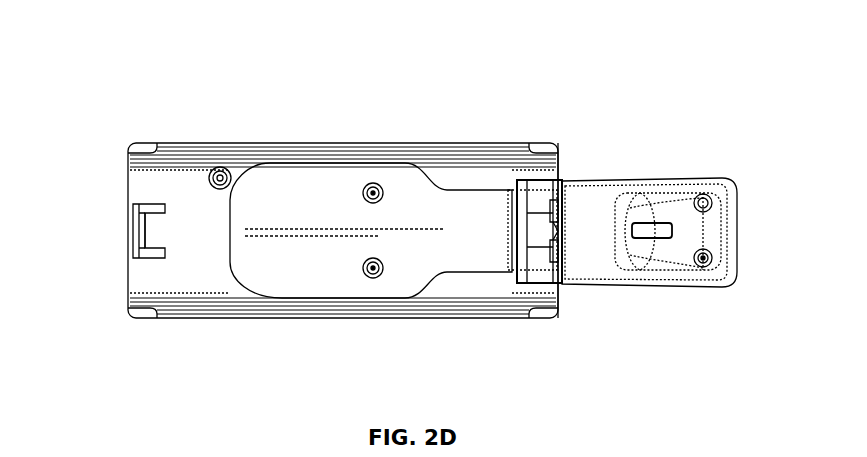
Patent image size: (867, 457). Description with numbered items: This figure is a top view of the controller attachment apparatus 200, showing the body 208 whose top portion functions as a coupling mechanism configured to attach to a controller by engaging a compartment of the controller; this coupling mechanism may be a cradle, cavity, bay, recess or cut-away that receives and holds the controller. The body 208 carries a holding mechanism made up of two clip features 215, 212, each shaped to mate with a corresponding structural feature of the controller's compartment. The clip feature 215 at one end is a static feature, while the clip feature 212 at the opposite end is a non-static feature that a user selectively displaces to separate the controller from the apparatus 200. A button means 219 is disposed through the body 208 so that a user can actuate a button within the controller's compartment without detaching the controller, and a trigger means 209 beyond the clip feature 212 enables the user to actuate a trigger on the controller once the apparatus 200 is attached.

The apparatus 200 is at (423, 50).
The body 208 is at (730, 328).
The trigger means 209 is at (652, 226).
The clip feature 212 is at (535, 200).
The clip feature 215 is at (147, 240).
The button means 219 is at (222, 176).